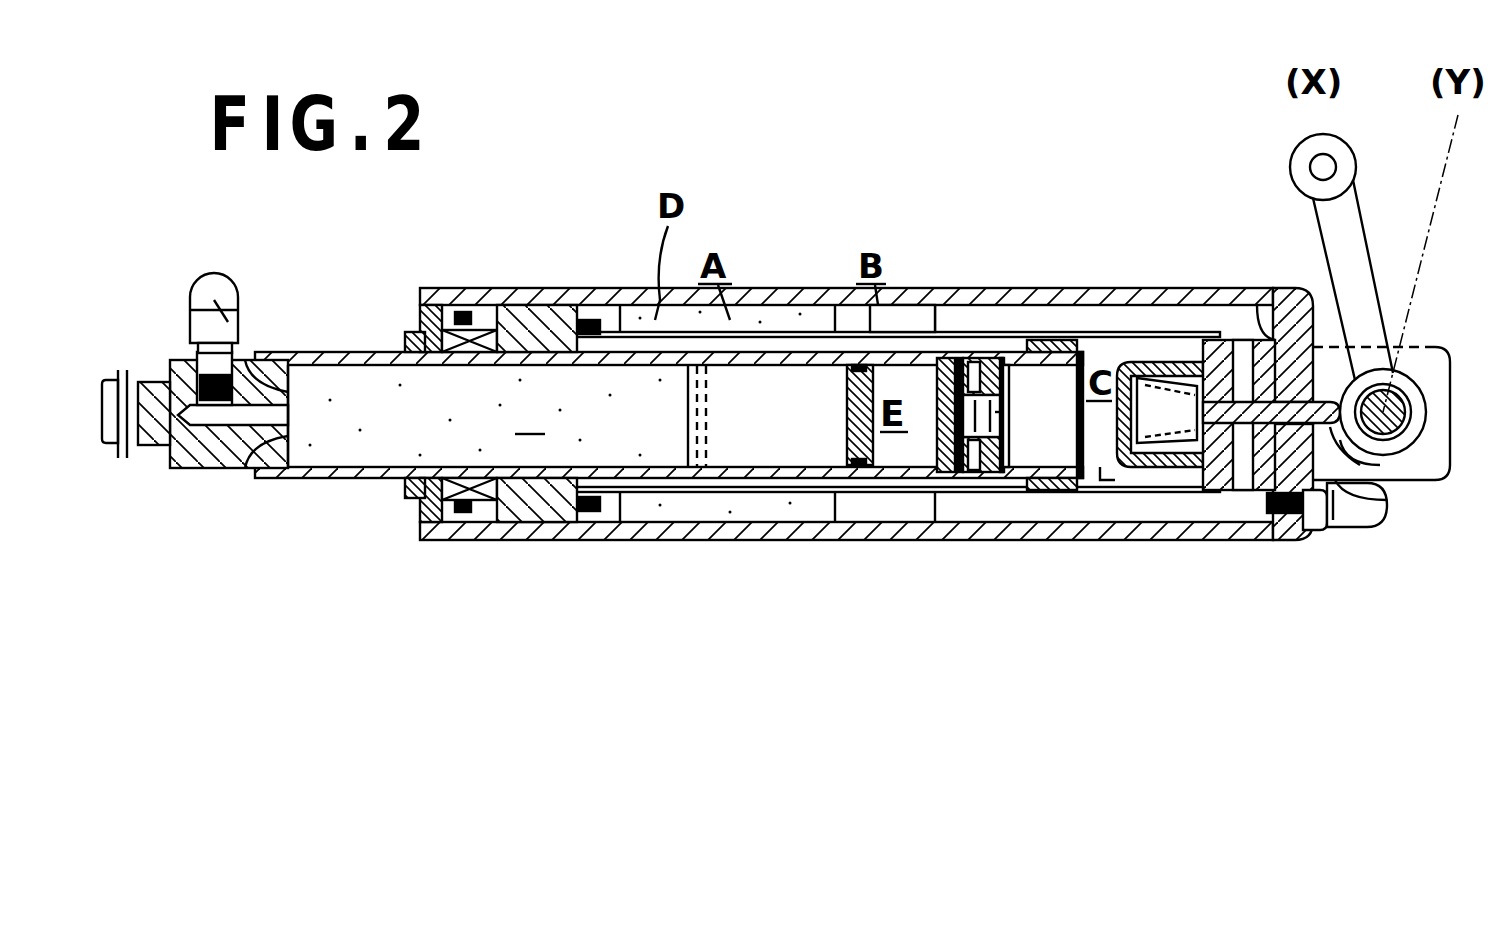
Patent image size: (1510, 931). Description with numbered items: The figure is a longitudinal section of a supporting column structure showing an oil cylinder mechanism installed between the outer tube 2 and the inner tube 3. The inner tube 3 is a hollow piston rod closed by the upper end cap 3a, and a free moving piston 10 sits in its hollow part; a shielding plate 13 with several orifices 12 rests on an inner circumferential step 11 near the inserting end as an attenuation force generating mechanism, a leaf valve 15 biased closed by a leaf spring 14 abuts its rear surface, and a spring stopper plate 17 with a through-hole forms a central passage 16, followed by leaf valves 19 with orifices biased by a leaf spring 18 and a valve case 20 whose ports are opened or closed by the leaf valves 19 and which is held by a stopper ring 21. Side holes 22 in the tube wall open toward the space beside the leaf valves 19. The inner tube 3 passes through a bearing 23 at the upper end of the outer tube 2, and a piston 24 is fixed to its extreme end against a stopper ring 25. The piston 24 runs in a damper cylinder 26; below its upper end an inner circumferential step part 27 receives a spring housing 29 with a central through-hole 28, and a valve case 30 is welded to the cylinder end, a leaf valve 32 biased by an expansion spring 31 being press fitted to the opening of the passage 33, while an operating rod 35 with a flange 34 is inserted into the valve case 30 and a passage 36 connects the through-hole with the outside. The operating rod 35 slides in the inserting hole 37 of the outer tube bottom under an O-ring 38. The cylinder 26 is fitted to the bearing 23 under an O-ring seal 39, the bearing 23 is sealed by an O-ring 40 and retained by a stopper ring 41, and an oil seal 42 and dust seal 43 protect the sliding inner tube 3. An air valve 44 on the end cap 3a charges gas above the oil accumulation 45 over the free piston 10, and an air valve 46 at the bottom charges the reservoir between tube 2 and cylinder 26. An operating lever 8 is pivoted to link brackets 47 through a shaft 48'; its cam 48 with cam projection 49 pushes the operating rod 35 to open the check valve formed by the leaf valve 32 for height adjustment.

The outer tube 2 is at (760, 478).
The inner tube 3 is at (283, 470).
The upper end cap 3a is at (215, 478).
The operating lever 8 is at (1350, 172).
The free moving piston 10 is at (800, 478).
The inner circumferential step 11 is at (850, 332).
The orifices 12 is at (860, 468).
The shielding plate 13 is at (915, 340).
The leaf spring 14 is at (925, 470).
The leaf valve 15 is at (958, 352).
The central passage 16 is at (990, 472).
The spring stopper plate 17 is at (970, 360).
The leaf spring 18 is at (945, 472).
The leaf valves 19 is at (995, 360).
The valve case 20 is at (1020, 350).
The stopper ring 21 is at (1040, 345).
The side holes 22 is at (980, 352).
The bearing 23 is at (540, 320).
The piston 24 is at (1005, 472).
The stopper ring 25 is at (1000, 412).
The damper cylinder 26 is at (680, 528).
The inner circumferential step part 27 is at (1130, 467).
The central through-hole 28 is at (1080, 478).
The spring housing 29 is at (1150, 370).
The valve case 30 is at (1230, 480).
The expansion spring 31 is at (1165, 380).
The leaf valve 32 is at (1210, 490).
The passage 33 is at (1265, 490).
The flange 34 is at (1330, 375).
The operating rod 35 is at (1290, 522).
The passage 36 is at (1298, 288).
The inserting hole 37 is at (1387, 505).
The O-ring 38 is at (1350, 527).
The O-ring seal 39 is at (590, 515).
The O-ring 40 is at (485, 315).
The stopper ring 41 is at (440, 330).
The oil seal 42 is at (445, 500).
The dust seal 43 is at (400, 492).
The air valve 44 is at (240, 297).
The oil accumulation 45 is at (733, 435).
The air valve 46 is at (1318, 530).
The link brackets 47 is at (1417, 350).
The cam 48 is at (1401, 446).
The shaft 48' is at (1400, 391).
The cam projection 49 is at (1395, 510).